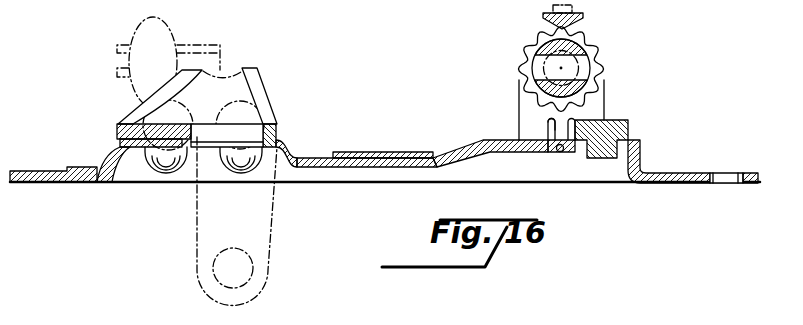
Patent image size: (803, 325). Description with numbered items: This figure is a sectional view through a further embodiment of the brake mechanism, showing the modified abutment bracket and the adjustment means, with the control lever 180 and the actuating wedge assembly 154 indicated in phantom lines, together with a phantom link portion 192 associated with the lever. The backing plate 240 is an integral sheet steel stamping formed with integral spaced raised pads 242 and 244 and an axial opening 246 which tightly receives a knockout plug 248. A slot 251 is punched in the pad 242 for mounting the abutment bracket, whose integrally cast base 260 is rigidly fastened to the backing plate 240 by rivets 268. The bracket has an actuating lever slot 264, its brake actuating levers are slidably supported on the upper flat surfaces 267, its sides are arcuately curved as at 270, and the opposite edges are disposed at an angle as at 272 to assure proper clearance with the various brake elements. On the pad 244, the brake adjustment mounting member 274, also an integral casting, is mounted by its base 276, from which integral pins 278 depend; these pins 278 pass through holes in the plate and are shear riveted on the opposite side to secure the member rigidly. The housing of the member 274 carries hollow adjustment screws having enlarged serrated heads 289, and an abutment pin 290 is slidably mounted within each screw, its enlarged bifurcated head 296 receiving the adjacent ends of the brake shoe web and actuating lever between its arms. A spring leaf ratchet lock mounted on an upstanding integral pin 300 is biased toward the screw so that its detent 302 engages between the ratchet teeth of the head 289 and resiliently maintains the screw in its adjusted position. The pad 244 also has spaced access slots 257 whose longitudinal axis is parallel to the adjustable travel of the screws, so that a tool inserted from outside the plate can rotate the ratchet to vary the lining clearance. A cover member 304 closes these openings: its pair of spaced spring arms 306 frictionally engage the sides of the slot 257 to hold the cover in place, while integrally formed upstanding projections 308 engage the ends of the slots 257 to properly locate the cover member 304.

The actuating wedge assembly 154 is at (222, 44).
The upper flat surfaces 267 is at (240, 68).
The angled edges 272 is at (264, 92).
The actuating lever slot 264 is at (268, 116).
The arcuately curved bracket sides 270 is at (140, 118).
The base 260 is at (116, 133).
The rivets 268 is at (161, 175).
The slot 251 is at (200, 178).
The backing plate 240 is at (298, 181).
The raised pad 242 is at (287, 141).
The axial opening 246 is at (420, 178).
The knockout plug 248 is at (350, 152).
The raised pad 244 is at (485, 141).
The access slots 257 is at (548, 132).
The spring arms 306 is at (538, 152).
The upstanding projections 308 is at (558, 151).
The cover member 304 is at (560, 156).
The pins 278 is at (613, 159).
The base 276 is at (622, 122).
The brake adjustment mounting member 274 is at (608, 97).
The serrated head 289 is at (601, 56).
The abutment pin 290 is at (538, 88).
The bifurcated head 296 is at (537, 45).
The detent 302 is at (584, 24).
The upstanding integral pin 300 is at (572, 11).
The control lever 180 is at (255, 247).
The link 192 is at (220, 275).